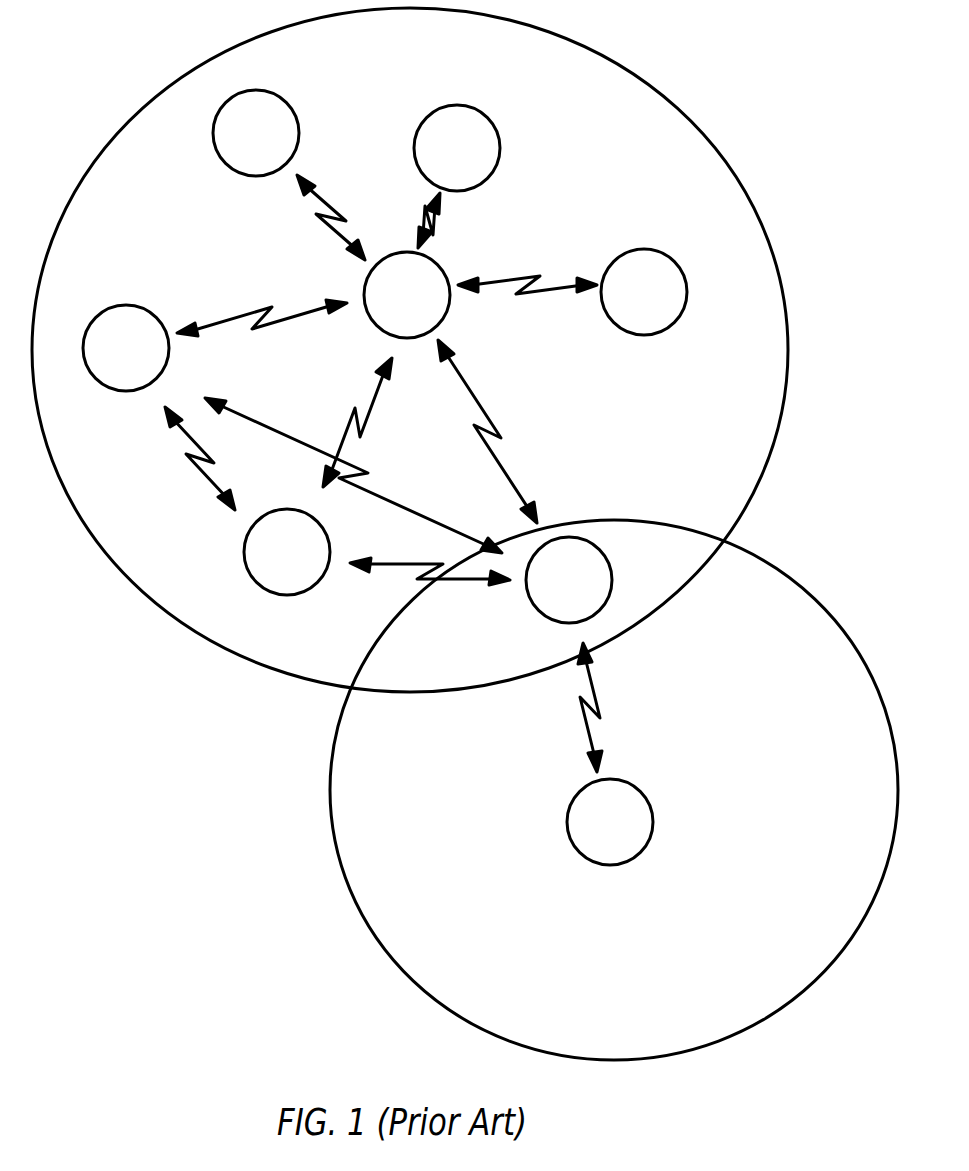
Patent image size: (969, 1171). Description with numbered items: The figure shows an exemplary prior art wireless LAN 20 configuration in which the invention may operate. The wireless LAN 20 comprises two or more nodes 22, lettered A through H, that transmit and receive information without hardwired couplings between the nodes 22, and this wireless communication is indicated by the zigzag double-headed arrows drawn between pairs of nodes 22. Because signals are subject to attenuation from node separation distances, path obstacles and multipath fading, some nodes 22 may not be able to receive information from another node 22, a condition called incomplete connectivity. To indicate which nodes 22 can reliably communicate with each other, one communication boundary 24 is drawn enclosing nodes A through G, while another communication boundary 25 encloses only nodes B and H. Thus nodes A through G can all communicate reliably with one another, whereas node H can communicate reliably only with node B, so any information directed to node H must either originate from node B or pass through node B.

The wireless LAN 20 is at (465, 534).
The node 22 is at (286, 103).
The communication boundary 24 is at (665, 97).
The communication boundary 25 is at (800, 586).